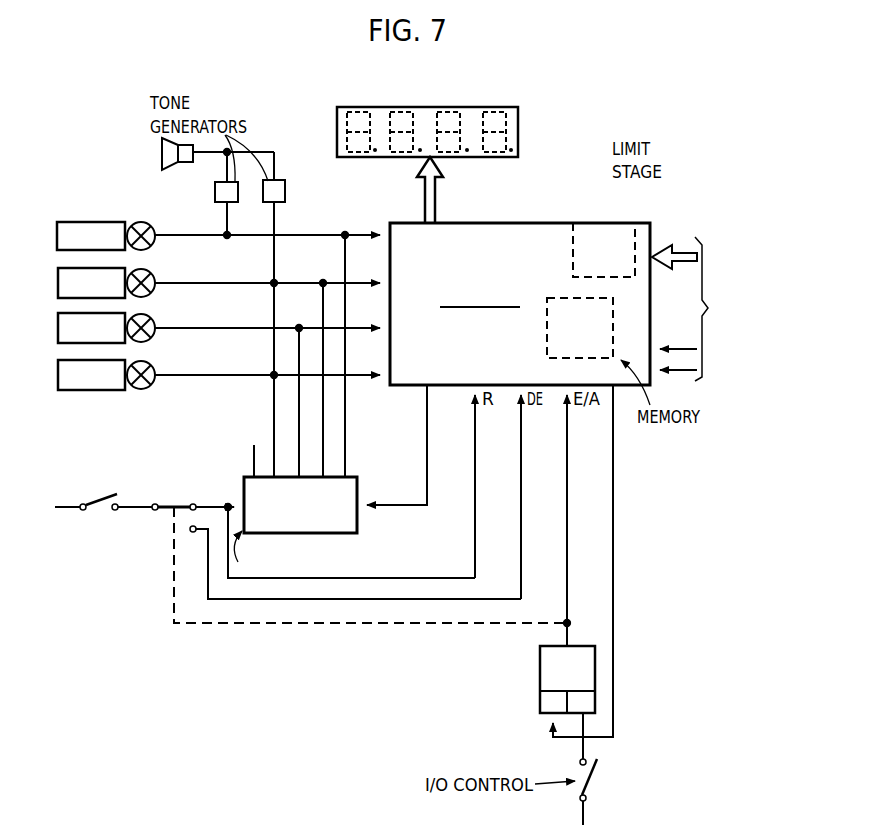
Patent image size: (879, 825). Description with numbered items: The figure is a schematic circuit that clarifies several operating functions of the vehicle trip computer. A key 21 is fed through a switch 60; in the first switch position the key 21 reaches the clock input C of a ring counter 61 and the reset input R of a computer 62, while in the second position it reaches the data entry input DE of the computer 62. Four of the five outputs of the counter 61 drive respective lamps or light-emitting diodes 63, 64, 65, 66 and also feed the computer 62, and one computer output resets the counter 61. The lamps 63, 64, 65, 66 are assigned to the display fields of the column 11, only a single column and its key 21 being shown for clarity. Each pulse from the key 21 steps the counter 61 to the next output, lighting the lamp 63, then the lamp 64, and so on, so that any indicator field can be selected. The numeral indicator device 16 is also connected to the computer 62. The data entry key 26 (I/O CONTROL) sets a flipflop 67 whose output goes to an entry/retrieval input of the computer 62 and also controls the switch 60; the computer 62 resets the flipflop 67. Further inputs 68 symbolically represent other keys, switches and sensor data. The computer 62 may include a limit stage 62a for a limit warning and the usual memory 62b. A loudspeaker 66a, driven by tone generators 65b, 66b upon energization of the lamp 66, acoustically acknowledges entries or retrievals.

The column 11 is at (102, 214).
The numeral indicator device 16 is at (519, 131).
The key 21 is at (99, 498).
The data entry key 26 is at (596, 772).
The switch 60 is at (178, 505).
The ring counter 61 is at (357, 485).
The computer 62 is at (546, 240).
The limit stage 62a is at (605, 228).
The memory 62b is at (547, 338).
The lamp 63 is at (153, 366).
The lamp 64 is at (153, 319).
The lamp 65 is at (153, 274).
The tone generator 65b is at (285, 186).
The lamp 66 is at (153, 227).
The loudspeaker 66a is at (162, 159).
The tone generator 66b is at (237, 198).
The flipflop 67 is at (550, 672).
The further inputs 68 is at (690, 309).